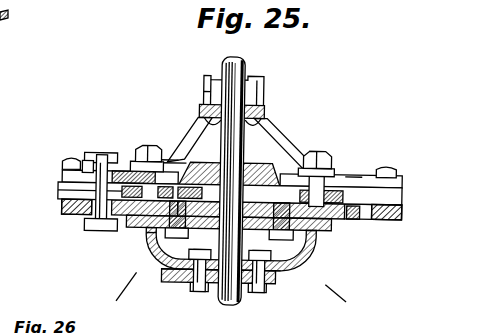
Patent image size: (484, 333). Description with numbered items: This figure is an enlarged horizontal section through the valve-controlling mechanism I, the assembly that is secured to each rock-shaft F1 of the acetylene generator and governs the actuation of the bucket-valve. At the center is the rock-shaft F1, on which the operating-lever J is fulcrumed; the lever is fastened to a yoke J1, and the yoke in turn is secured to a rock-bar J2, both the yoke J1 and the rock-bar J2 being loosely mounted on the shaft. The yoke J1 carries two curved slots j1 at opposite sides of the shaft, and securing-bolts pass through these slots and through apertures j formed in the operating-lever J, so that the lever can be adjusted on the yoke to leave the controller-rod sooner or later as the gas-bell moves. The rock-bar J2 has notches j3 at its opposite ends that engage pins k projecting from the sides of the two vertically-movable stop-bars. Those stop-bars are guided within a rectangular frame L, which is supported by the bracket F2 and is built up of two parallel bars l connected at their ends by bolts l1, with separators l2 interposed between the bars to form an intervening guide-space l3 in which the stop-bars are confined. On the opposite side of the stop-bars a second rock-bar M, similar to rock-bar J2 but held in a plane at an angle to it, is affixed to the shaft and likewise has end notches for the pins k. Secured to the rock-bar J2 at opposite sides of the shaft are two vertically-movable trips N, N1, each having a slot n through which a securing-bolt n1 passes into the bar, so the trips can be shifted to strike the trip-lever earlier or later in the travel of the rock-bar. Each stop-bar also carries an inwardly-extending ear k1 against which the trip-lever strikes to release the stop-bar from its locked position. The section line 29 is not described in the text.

The rock-shaft F1 is at (243, 138).
The bracket F2 is at (197, 118).
The valve-controlling mechanism I is at (169, 140).
The inwardly-extending ear k1 is at (347, 137).
The pins k is at (98, 233).
The parallel bars l is at (60, 177).
The bolts l1 is at (76, 163).
The separators l2 is at (62, 195).
The guide-space l3 is at (314, 160).
The rectangular frame L is at (357, 174).
The rock-bar M is at (124, 160).
The operating-lever J is at (172, 284).
The yoke J1 is at (306, 258).
The rock-bar J2 is at (383, 221).
The apertures j is at (163, 272).
The curved slots j1 is at (211, 290).
The notches j3 is at (88, 221).
The trip N is at (150, 236).
The trip N1 is at (330, 283).
The slot n is at (156, 262).
The securing-bolt n1 is at (229, 261).
The rod 29 is at (237, 300).